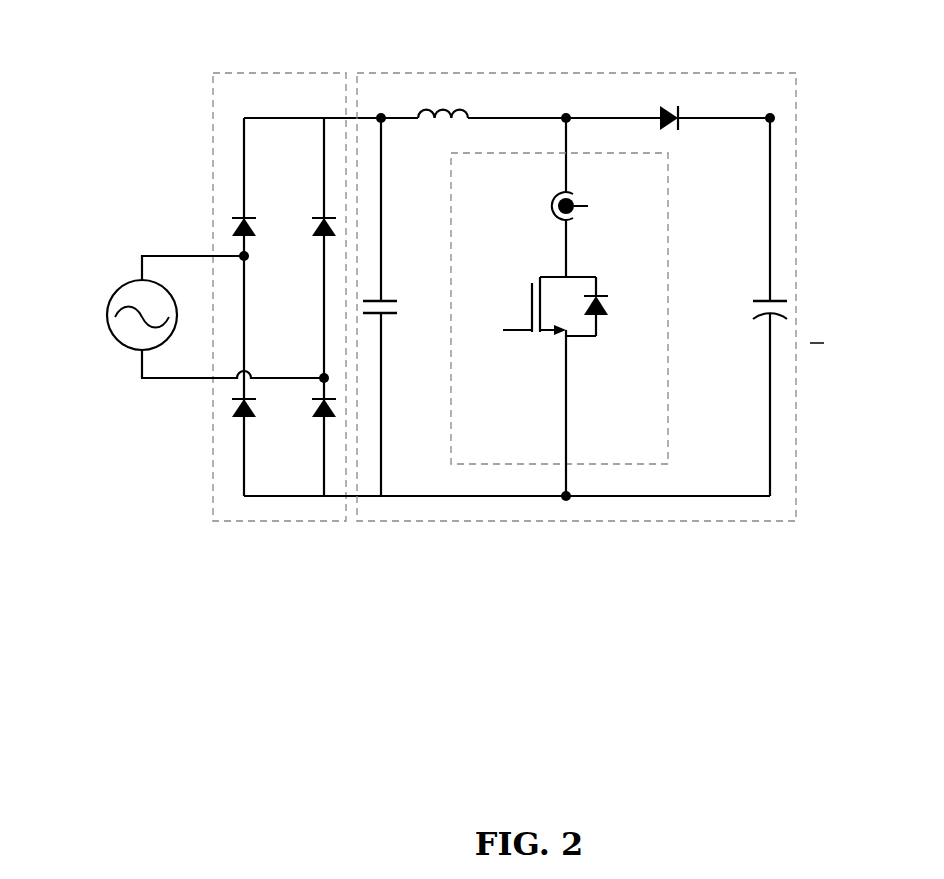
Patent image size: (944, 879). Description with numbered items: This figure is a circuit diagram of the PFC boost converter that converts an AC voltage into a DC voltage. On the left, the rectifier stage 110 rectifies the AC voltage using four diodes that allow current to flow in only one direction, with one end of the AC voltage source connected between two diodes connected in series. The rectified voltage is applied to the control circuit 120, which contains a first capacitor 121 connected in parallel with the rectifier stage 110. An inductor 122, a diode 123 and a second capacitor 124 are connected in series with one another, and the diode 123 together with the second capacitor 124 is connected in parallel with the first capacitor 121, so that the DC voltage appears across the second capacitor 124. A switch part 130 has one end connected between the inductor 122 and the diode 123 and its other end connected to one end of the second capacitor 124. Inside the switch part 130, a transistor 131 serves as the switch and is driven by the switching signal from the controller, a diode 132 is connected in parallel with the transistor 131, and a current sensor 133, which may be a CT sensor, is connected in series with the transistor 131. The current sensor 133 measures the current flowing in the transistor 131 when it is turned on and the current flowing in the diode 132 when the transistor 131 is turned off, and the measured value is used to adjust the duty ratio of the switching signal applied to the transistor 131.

The rectifier stage 110 is at (282, 521).
The control circuit 120 is at (678, 521).
The first capacitor 121 is at (391, 350).
The inductor 122 is at (441, 100).
The diode 123 is at (674, 100).
The second capacitor 124 is at (761, 344).
The switch part 130 is at (517, 464).
The transistor 131 is at (531, 347).
The diode 132 is at (585, 355).
The current sensor 133 is at (535, 207).